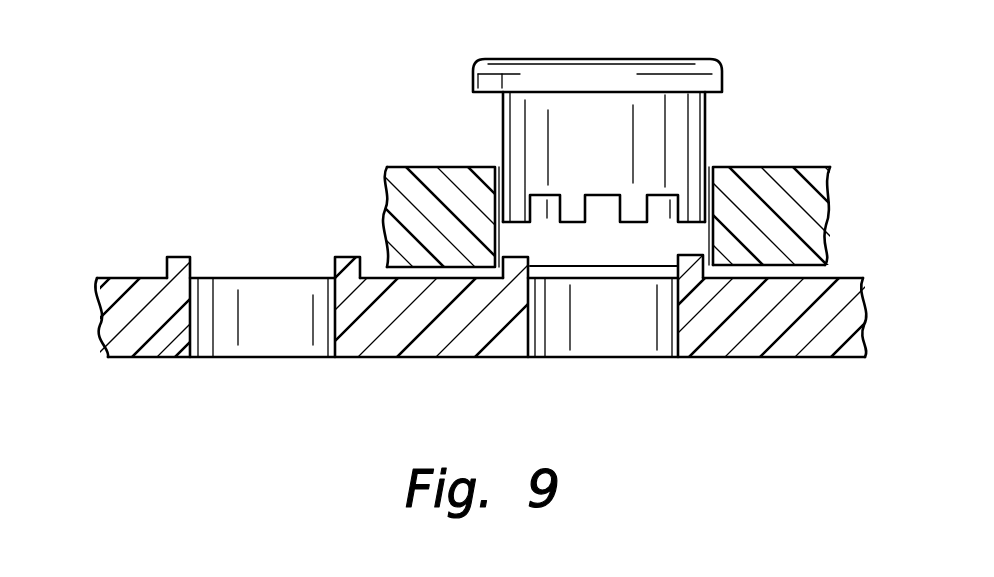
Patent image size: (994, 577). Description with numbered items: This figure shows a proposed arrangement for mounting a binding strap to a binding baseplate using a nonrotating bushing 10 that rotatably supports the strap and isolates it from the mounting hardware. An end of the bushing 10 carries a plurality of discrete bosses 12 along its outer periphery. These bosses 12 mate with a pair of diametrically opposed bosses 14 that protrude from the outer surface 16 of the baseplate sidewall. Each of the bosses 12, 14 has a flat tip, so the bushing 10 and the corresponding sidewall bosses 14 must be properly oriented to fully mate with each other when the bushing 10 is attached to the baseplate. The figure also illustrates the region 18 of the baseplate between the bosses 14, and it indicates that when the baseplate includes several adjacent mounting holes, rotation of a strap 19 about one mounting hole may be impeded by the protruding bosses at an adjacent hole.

The bushing 10 is at (721, 70).
The discrete bosses 12 is at (677, 226).
The diametrically opposed bosses 14 is at (177, 256).
The outer surface 16 is at (830, 278).
The recesses in base 18 is at (268, 345).
The strap 19 is at (407, 167).